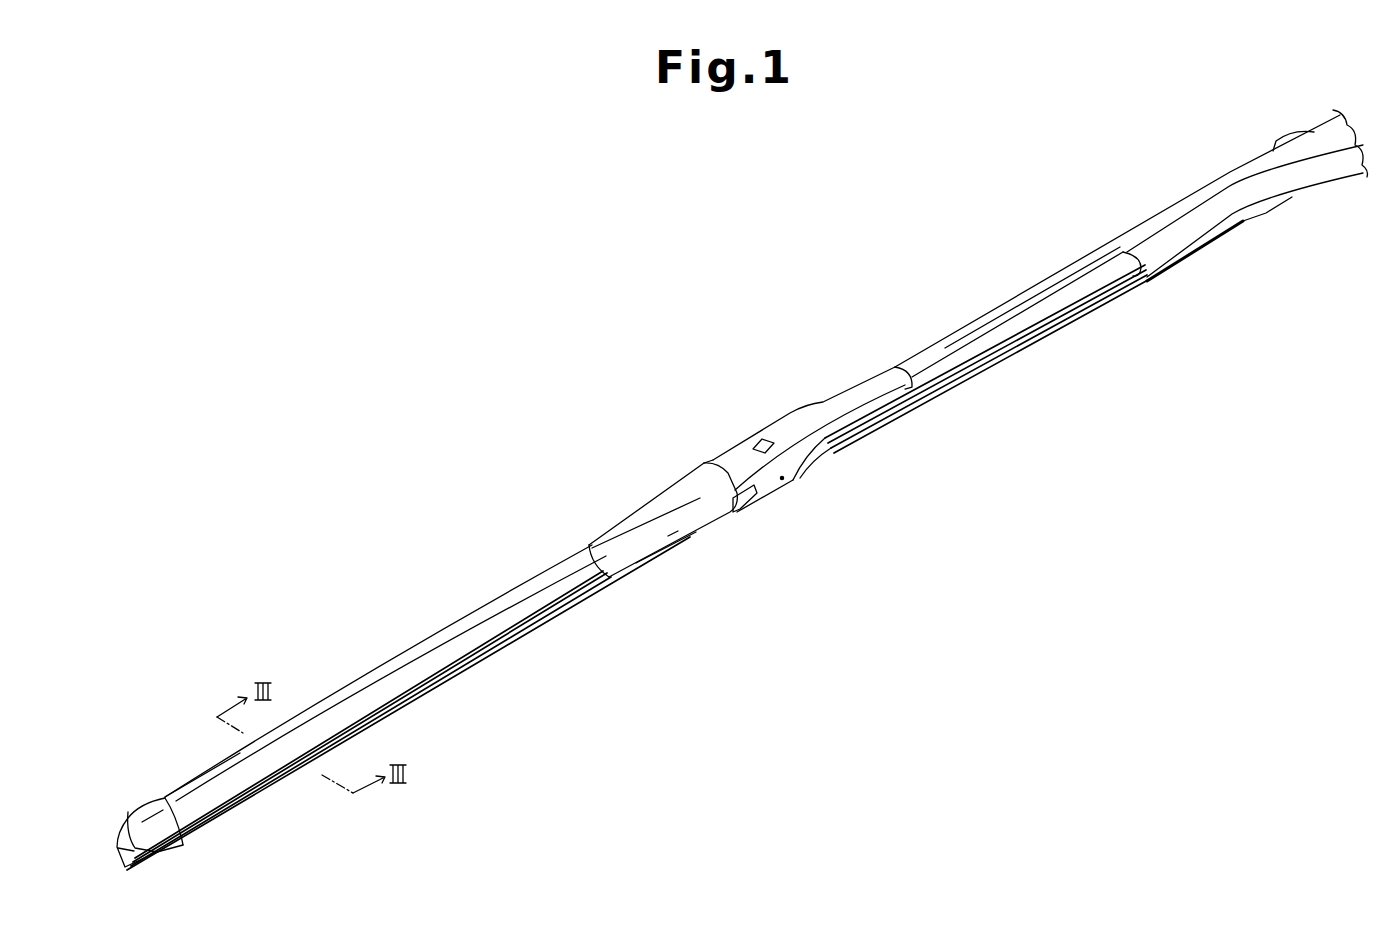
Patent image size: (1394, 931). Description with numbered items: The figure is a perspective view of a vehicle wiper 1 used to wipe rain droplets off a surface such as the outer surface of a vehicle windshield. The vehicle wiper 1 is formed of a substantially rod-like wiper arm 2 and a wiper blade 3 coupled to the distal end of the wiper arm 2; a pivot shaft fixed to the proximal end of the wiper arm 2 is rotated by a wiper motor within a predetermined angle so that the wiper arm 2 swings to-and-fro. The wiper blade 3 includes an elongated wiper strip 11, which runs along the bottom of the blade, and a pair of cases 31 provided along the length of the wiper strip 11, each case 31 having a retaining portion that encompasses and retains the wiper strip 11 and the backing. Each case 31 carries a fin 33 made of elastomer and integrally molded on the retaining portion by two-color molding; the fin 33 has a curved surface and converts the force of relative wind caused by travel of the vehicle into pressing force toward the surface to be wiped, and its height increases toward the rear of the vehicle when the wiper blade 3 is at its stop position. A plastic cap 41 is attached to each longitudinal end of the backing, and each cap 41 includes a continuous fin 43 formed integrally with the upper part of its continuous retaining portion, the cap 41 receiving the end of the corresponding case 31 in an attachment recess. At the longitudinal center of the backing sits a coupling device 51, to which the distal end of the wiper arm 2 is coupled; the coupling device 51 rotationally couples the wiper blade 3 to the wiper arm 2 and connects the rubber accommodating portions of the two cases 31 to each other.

The vehicle wiper 1 is at (510, 370).
The wiper arm 2 is at (1013, 315).
The wiper blade 3 is at (347, 690).
The wiper strip 11 is at (487, 657).
The case 31 is at (465, 617).
The fin 33 is at (205, 776).
The cap 41 is at (133, 815).
The continuous fin 43 is at (160, 826).
The coupling device 51 is at (697, 480).